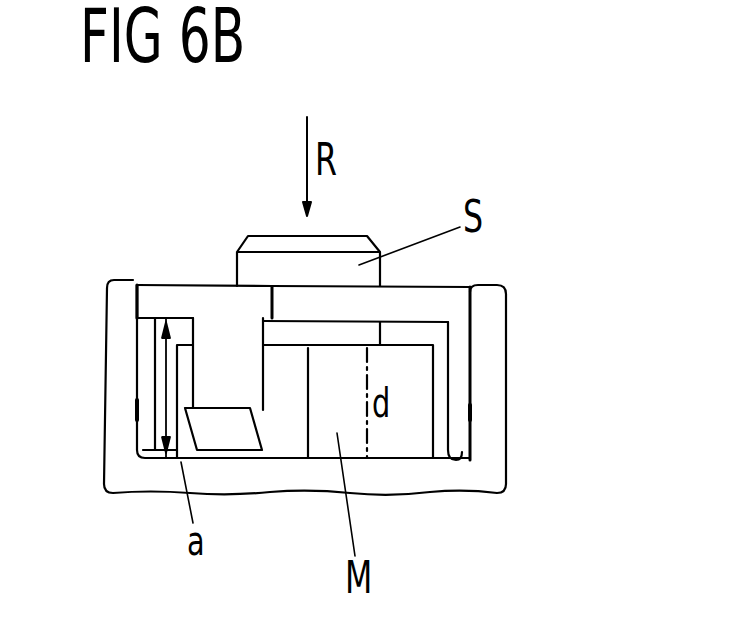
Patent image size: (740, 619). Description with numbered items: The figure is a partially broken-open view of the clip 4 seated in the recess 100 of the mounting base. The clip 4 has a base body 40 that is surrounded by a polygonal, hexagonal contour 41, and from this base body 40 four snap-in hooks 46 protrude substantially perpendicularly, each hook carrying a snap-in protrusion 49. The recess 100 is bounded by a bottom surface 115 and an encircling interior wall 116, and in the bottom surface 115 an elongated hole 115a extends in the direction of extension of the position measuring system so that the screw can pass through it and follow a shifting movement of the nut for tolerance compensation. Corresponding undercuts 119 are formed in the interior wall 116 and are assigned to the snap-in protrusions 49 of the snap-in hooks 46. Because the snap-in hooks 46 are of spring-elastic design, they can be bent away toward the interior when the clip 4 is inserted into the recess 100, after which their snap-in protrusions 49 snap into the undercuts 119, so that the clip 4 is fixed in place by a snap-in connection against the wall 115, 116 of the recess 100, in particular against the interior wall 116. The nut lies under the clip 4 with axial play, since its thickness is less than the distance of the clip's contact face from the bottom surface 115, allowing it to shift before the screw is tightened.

The clip 4 is at (197, 285).
The base body 40 is at (447, 298).
The polygonal contour 41 is at (137, 292).
The snap-in hooks 46 is at (472, 327).
The snap-in protrusions 49 is at (135, 417).
The recess 100 is at (470, 460).
The bottom surface 115 is at (437, 462).
The elongated hole 115a is at (443, 461).
The interior wall 116 is at (468, 363).
The undercuts 119 is at (150, 452).